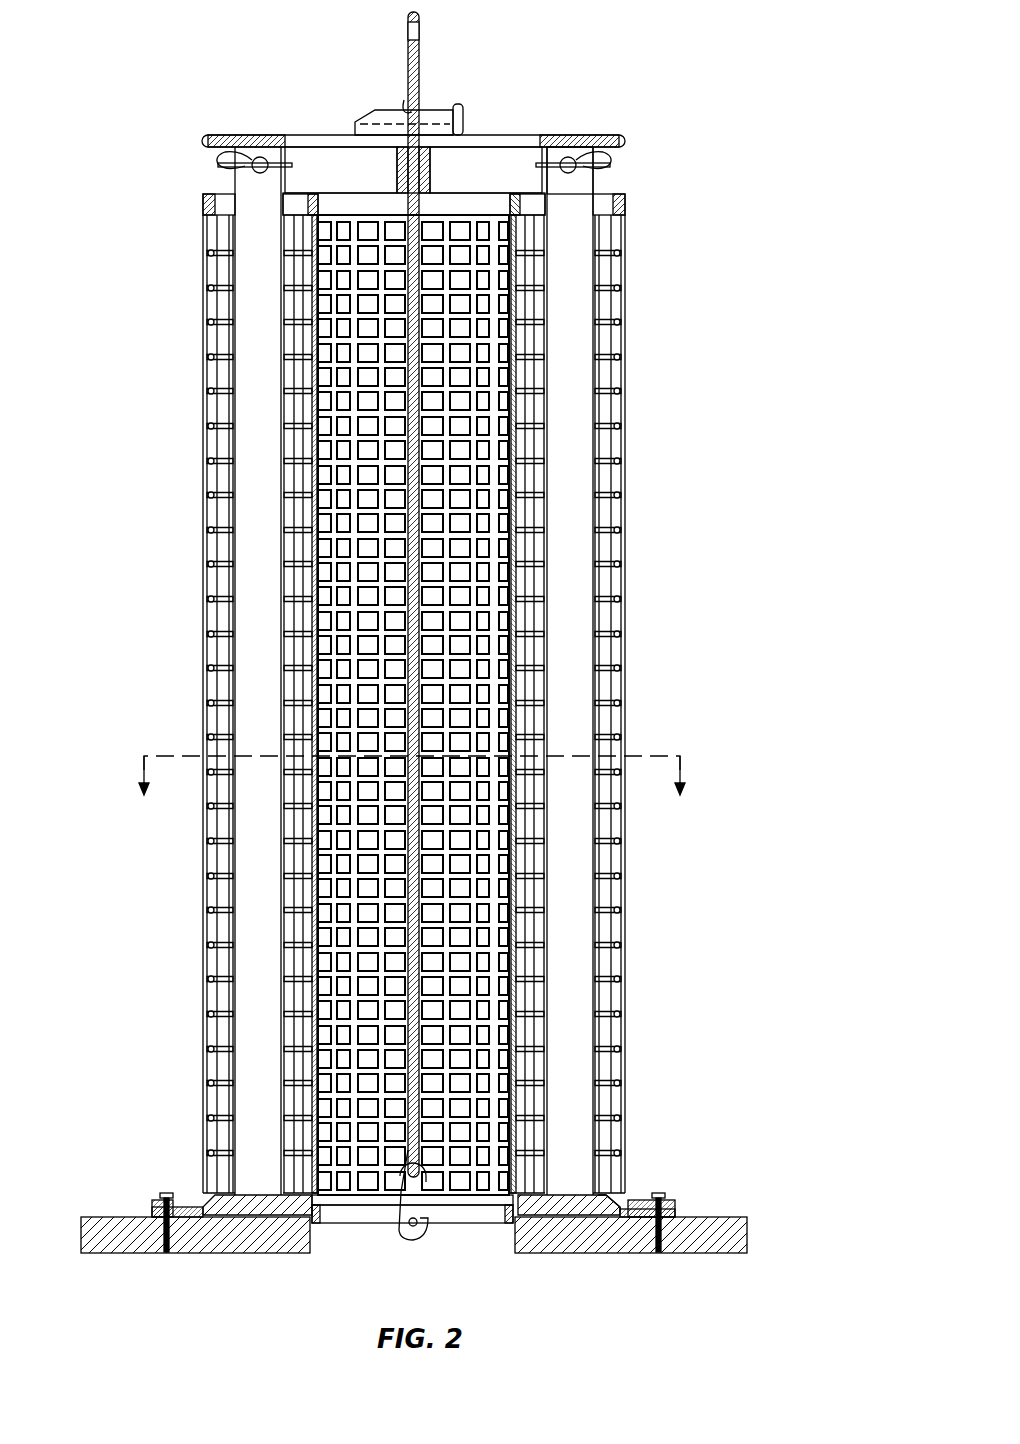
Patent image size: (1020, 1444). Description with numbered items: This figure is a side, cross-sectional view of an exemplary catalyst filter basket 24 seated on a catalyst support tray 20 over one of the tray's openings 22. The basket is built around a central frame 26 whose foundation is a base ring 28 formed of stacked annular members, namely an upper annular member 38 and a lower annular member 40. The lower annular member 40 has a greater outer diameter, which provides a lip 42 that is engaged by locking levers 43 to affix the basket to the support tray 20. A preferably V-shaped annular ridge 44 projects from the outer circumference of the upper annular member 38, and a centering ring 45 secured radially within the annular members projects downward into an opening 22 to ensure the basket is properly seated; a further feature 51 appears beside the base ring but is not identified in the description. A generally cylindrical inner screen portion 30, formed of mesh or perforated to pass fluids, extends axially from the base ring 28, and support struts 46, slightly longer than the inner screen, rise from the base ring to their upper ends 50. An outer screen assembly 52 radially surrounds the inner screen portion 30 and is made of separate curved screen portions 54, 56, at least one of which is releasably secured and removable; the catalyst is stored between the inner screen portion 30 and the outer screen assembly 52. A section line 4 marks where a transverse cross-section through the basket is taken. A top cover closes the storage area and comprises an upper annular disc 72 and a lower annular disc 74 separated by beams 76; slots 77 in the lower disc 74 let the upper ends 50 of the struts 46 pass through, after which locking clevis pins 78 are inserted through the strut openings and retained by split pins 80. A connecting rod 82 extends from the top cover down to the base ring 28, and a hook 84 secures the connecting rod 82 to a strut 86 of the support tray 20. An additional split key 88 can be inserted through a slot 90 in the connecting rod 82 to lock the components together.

The section line 4- 4 is at (410, 793).
The catalyst support tray 20 is at (728, 1245).
The openings 22 is at (305, 1236).
The catalyst filter basket 24 is at (437, 657).
The central frame 26 is at (314, 540).
The base ring 28 is at (277, 1216).
The inner screen portion 30 is at (313, 578).
The upper annular member 38 is at (560, 1216).
The lower annular member 40 is at (618, 1220).
The lip 42 is at (628, 1208).
The locking levers 43 is at (163, 1210).
The annular ridge 44 is at (200, 1207).
The centering ring 45 is at (505, 1216).
The support struts 46 is at (245, 650).
The upper end 50 is at (312, 126).
The chamfered corner 51 is at (620, 1195).
The outer screen assembly 52 is at (611, 693).
The screen portion 54 is at (225, 196).
The screen portion 56 is at (624, 412).
The upper annular disc 72 is at (413, 95).
The lower annular disc 74 is at (450, 150).
The beams 76 is at (320, 170).
The slots 77 is at (598, 190).
The locking clevis pins 78 is at (252, 170).
The split pin 80 is at (230, 152).
The connecting rod 82 is at (410, 46).
The hook 84 is at (400, 1206).
The strut 86 is at (418, 1232).
The split key 88 is at (440, 110).
The slot 90 is at (406, 106).